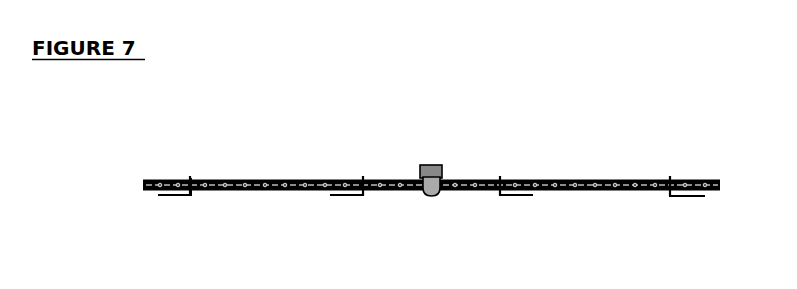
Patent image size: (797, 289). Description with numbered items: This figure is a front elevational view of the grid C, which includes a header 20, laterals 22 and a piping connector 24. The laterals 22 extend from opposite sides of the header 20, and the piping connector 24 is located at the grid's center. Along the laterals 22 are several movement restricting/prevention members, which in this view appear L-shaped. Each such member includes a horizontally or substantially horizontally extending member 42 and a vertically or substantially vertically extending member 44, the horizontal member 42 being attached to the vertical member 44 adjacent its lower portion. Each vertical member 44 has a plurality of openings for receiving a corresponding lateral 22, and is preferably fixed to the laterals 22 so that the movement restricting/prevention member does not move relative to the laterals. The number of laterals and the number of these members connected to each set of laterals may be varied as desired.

The header 20 is at (621, 178).
The laterals 22 is at (292, 178).
The piping connector 24 is at (432, 150).
The horizontally extending member 42 is at (183, 205).
The vertically extending member 44 is at (190, 178).
The grid C is at (573, 112).